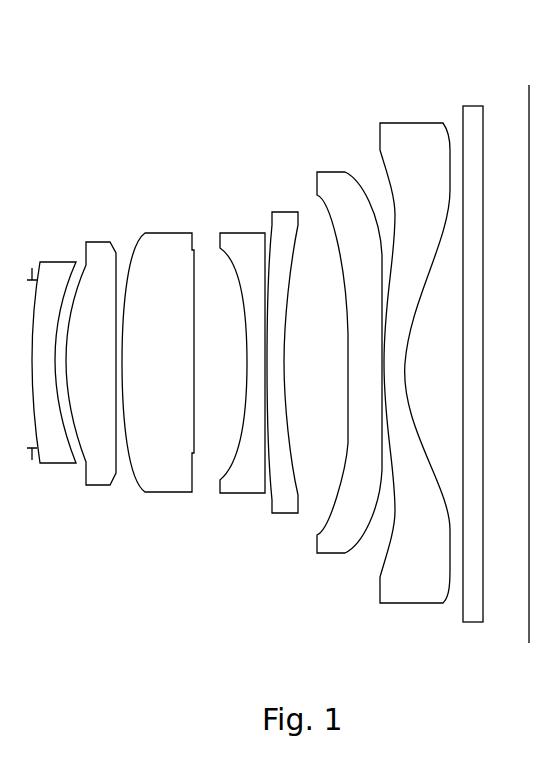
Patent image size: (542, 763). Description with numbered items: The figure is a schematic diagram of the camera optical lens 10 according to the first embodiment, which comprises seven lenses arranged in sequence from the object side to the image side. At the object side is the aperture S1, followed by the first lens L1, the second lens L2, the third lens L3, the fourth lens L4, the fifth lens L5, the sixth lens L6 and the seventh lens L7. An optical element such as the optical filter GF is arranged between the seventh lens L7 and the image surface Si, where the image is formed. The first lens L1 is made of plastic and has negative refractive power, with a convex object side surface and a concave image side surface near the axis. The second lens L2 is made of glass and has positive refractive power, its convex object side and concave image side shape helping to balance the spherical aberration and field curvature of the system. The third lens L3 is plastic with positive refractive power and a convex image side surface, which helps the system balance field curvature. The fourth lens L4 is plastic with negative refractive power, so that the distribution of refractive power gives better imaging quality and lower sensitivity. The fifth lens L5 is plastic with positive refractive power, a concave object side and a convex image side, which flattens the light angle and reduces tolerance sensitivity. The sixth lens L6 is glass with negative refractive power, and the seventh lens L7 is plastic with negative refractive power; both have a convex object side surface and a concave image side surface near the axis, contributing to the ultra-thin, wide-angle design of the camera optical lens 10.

The camera optical lens 10 is at (298, 38).
The aperture S1 is at (29, 348).
The first lens L1 is at (54, 353).
The second lens L2 is at (91, 353).
The third lens L3 is at (158, 354).
The fourth lens L4 is at (242, 349).
The fifth lens L5 is at (282, 353).
The sixth lens L6 is at (349, 353).
The seventh lens L7 is at (415, 353).
The optical filter GF is at (475, 352).
The image surface Si is at (529, 354).